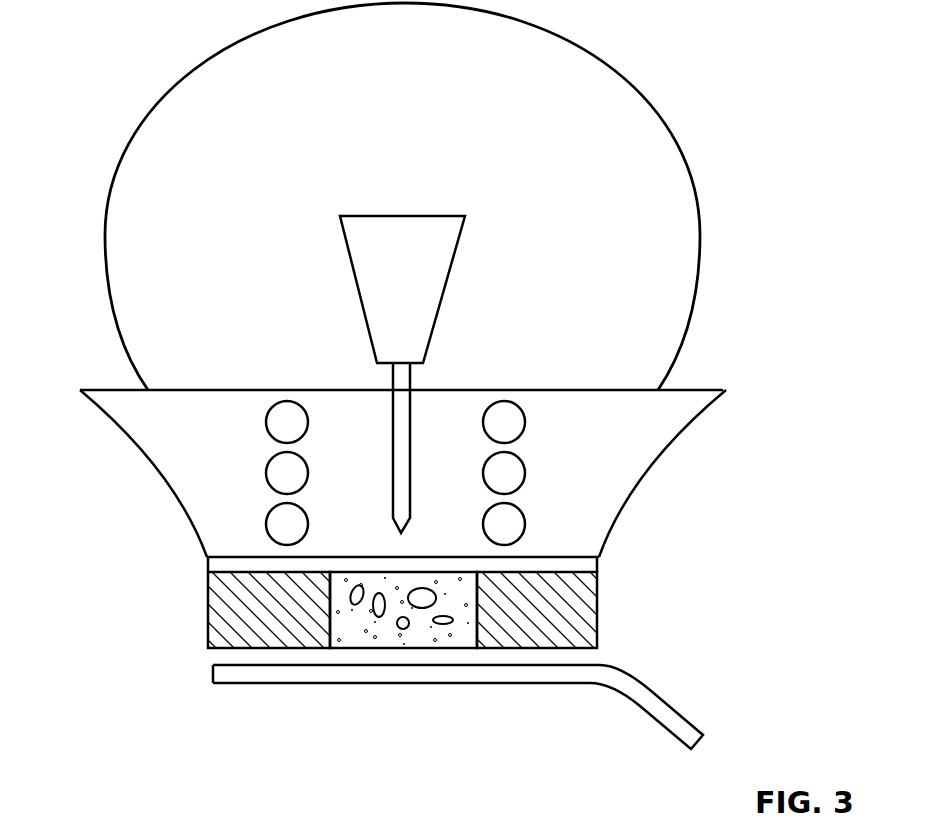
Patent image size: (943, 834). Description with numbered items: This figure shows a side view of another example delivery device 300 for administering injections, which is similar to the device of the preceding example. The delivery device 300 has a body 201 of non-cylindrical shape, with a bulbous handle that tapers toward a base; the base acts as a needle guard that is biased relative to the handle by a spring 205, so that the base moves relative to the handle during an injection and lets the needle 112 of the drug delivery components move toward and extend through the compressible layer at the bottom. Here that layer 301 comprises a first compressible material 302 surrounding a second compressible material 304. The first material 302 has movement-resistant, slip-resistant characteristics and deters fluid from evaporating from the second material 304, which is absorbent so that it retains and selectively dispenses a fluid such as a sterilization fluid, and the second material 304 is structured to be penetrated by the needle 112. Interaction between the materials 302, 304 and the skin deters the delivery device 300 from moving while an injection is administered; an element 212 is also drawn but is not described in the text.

The delivery device 300 is at (143, 52).
The body 201 is at (632, 102).
The needle 112 is at (402, 447).
The spring 205 is at (280, 474).
The layer 301 is at (197, 627).
The first compressible material 302 is at (205, 658).
The second compressible material 304 is at (421, 658).
The bent lead / terminal 212 is at (672, 722).